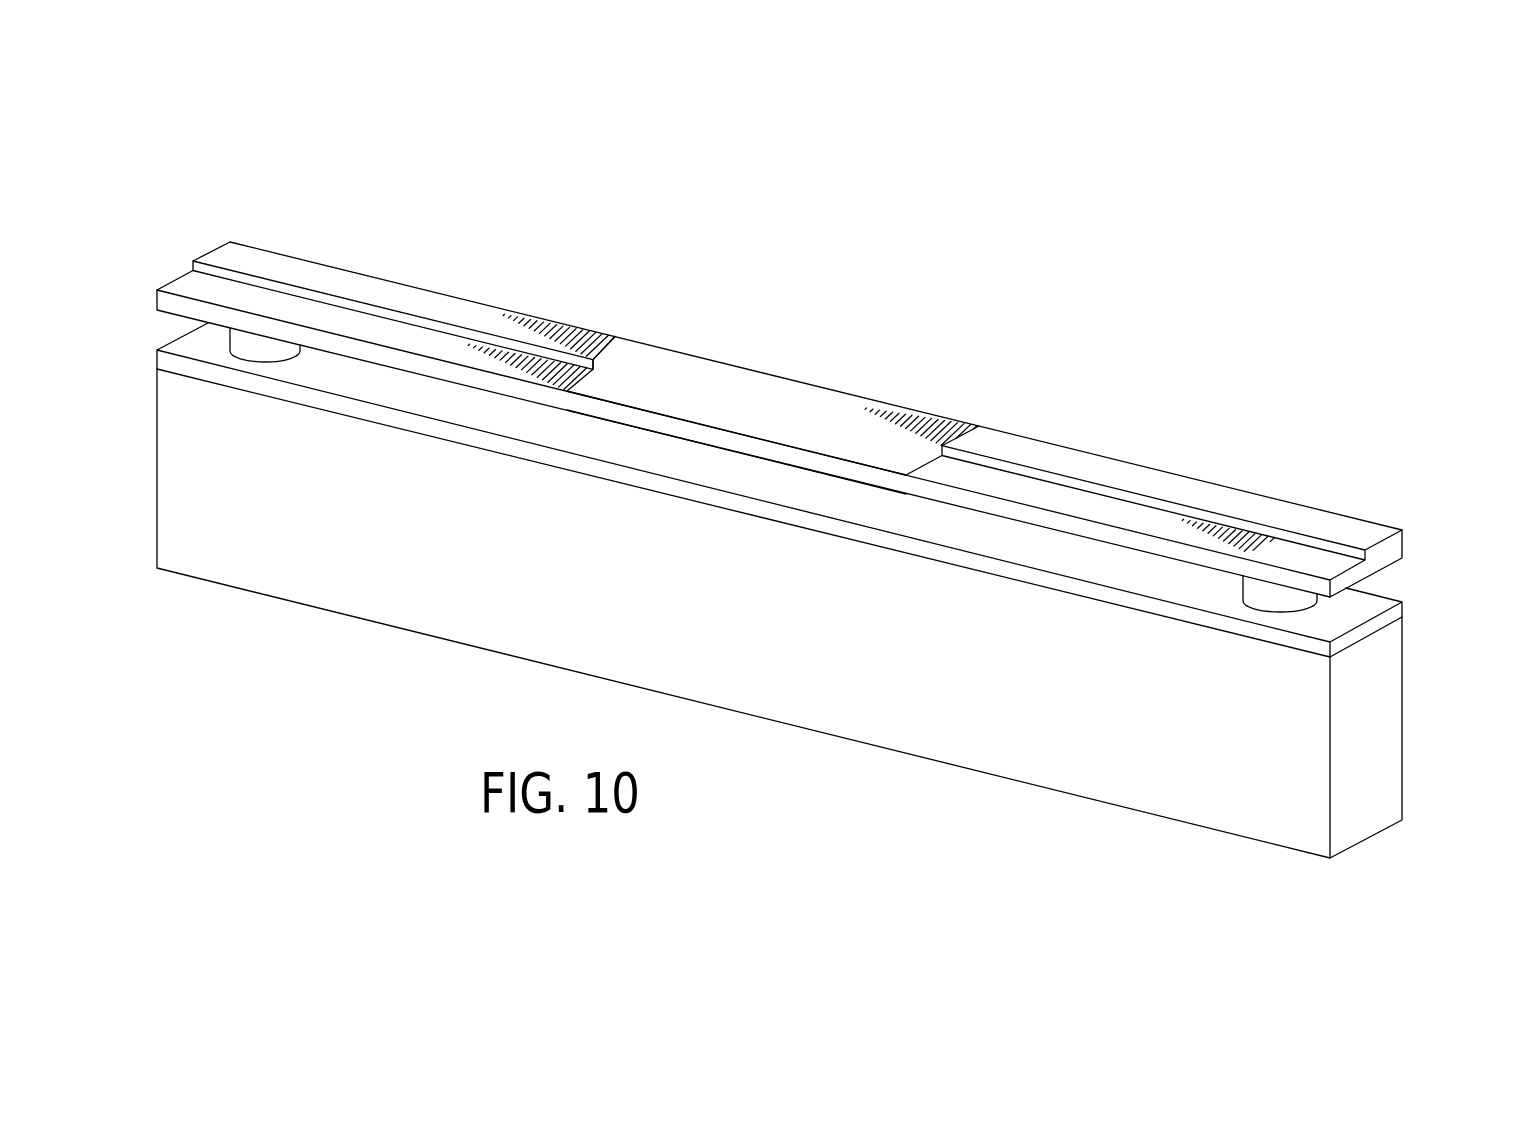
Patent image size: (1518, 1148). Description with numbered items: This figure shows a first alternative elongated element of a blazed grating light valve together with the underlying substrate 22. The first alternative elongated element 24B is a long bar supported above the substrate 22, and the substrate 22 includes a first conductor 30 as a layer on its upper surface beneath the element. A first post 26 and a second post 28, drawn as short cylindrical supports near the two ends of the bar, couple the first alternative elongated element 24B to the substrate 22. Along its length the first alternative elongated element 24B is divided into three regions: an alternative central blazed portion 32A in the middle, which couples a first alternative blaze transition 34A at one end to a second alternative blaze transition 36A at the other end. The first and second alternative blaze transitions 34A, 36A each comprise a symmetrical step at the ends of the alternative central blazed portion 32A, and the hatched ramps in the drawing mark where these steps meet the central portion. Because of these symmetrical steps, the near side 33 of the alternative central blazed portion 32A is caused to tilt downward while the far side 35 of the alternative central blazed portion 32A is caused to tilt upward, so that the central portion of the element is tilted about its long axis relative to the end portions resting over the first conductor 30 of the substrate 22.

The substrate 22 is at (726, 619).
The first alternative elongated element 24B is at (335, 158).
The first post 26 is at (250, 353).
The second post 28 is at (1265, 603).
The first conductor 30 is at (960, 558).
The alternative central blazed portion 32A is at (668, 321).
The near side 33 is at (615, 402).
The first alternative blaze transition 34A is at (335, 236).
The far side 35 is at (668, 355).
The second alternative blaze transition 36A is at (1002, 405).